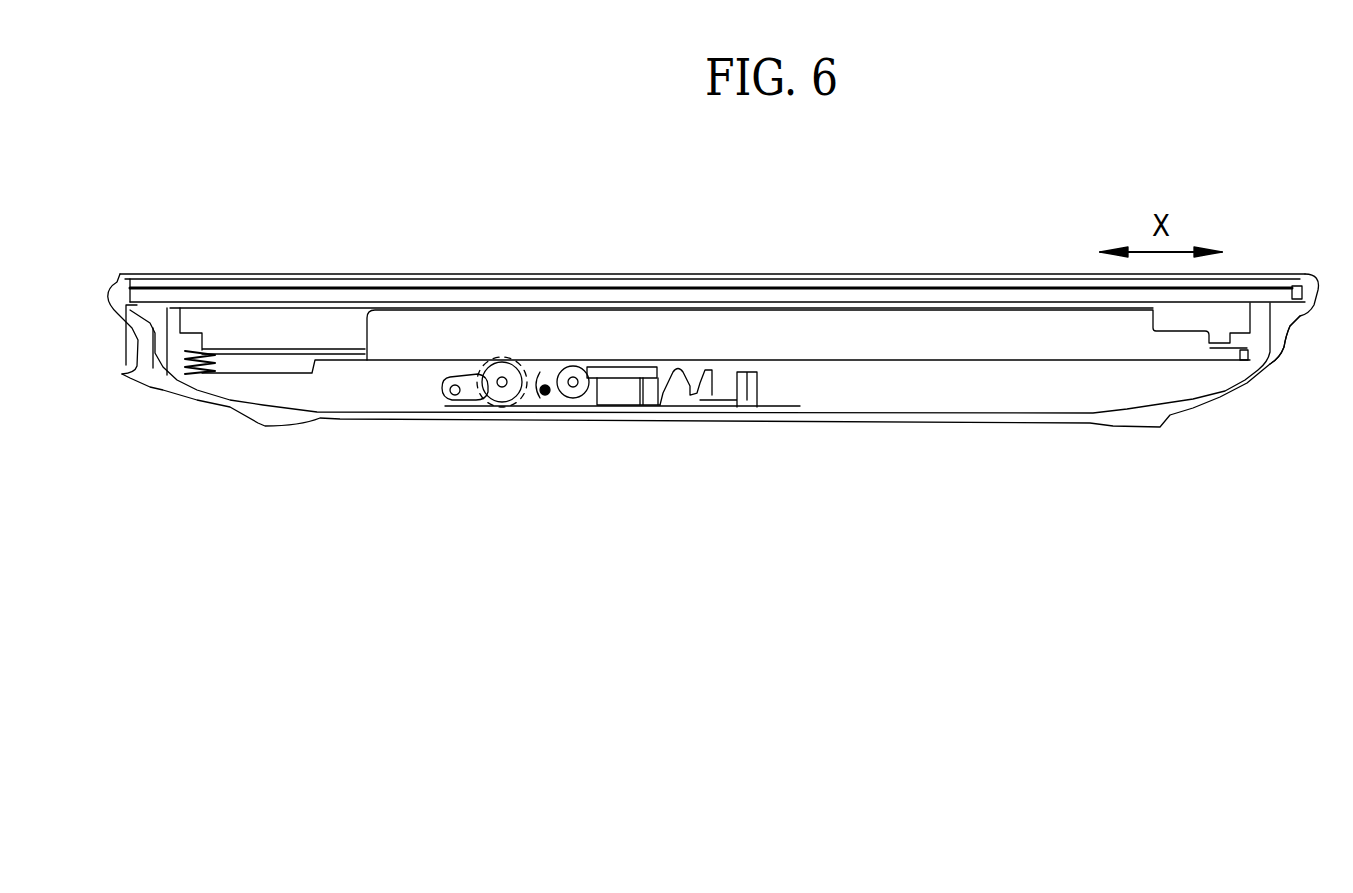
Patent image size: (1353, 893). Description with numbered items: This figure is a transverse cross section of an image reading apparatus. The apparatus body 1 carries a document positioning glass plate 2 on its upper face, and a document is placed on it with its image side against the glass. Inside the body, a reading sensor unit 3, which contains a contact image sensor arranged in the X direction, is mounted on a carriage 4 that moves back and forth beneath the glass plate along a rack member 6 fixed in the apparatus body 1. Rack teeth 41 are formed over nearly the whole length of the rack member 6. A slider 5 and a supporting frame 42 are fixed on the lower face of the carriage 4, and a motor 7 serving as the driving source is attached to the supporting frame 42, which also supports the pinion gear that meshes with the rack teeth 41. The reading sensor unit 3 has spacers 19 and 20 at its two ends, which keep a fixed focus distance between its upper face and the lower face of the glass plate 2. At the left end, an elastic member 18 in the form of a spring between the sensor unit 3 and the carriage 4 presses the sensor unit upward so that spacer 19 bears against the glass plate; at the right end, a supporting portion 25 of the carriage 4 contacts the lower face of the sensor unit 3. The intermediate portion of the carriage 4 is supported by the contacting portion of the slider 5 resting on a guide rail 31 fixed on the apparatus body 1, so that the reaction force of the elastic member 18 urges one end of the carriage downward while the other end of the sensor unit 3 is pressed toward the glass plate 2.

The apparatus body 1 is at (1088, 423).
The document positioning glass plate 2 is at (473, 296).
The reading sensor unit 3 is at (276, 323).
The carriage 4 is at (955, 332).
The slider 5 is at (706, 372).
The rack member 6 is at (657, 407).
The motor 7 is at (507, 402).
The elastic member 18 is at (187, 358).
The spacer 19 is at (173, 343).
The spacer 20 is at (1286, 345).
The supporting portion 25 is at (1262, 345).
The guide rail 31 is at (687, 408).
The rack teeth 41 is at (587, 405).
The supporting frame 42 is at (478, 405).